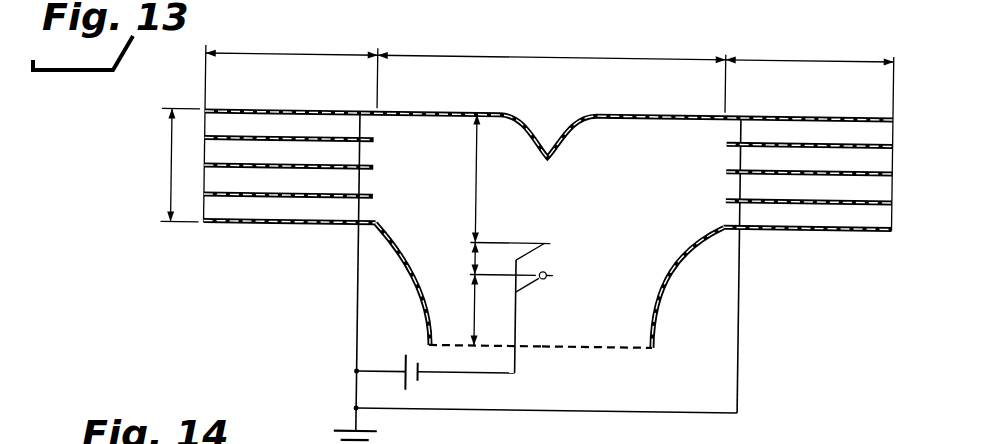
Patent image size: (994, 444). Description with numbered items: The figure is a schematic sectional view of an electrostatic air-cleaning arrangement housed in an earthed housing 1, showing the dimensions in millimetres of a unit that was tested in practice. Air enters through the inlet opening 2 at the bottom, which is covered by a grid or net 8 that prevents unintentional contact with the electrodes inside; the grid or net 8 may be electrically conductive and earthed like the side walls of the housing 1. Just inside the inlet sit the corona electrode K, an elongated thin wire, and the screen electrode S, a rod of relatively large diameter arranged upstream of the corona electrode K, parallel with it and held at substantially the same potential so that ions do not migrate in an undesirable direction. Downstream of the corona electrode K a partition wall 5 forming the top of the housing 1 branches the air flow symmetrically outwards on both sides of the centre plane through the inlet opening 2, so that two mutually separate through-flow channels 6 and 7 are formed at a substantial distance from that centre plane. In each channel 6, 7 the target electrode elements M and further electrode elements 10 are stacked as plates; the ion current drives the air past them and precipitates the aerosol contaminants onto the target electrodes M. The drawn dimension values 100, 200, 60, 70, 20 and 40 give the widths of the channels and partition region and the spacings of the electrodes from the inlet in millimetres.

The housing 1 is at (410, 267).
The inlet opening 2 is at (572, 324).
The partition wall 5 is at (645, 113).
The through-flow channel 6 is at (331, 152).
The through-flow channel 7 is at (762, 150).
The grid or net 8 is at (612, 344).
The further electrode elements 10 is at (239, 140).
The target electrode elements M is at (288, 167).
The corona electrode K is at (522, 245).
The screen electrode S is at (521, 277).
The dimension 100 is at (550, 45).
The dimension 200 is at (552, 45).
The dimension 60 is at (164, 165).
The dimension 70 is at (457, 178).
The dimension 20 is at (454, 258).
The dimension 40 is at (455, 310).